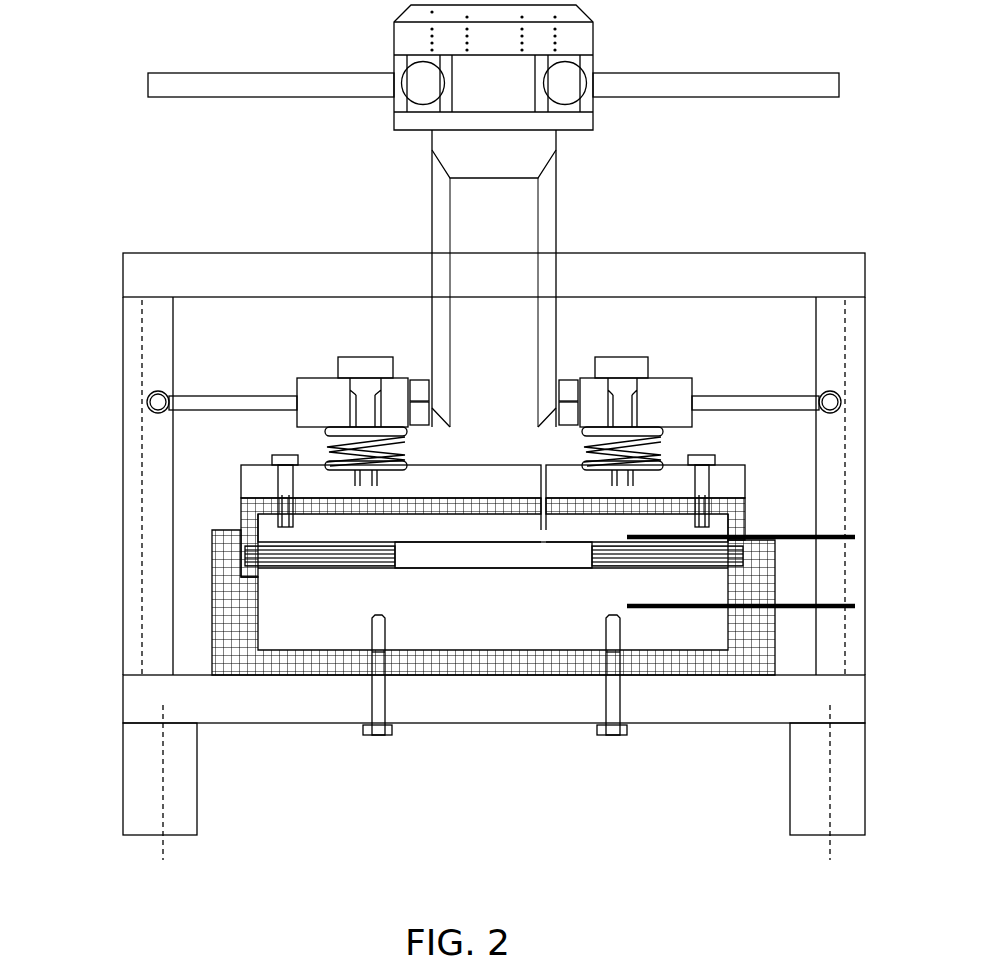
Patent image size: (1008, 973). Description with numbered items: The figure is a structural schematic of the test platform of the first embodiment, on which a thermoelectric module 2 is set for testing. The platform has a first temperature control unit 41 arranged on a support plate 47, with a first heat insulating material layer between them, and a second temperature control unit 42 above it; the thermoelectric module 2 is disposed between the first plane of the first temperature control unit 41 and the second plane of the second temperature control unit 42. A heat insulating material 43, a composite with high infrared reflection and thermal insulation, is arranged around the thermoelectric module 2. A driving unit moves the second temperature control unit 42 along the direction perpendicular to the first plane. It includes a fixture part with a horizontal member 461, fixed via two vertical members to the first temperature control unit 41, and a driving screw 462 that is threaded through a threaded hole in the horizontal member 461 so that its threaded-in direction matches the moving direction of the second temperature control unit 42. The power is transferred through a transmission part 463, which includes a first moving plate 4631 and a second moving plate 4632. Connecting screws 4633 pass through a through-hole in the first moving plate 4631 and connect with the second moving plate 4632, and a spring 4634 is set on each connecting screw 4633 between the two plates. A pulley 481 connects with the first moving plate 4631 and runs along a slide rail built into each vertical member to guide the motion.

The thermoelectric module 2 is at (467, 550).
The first temperature control unit 41 is at (541, 610).
The second temperature control unit 42 is at (330, 525).
The heat insulating material 43 is at (270, 555).
The support plate 47 is at (716, 712).
The horizontal member 461 is at (258, 278).
The driving screw 462 is at (468, 228).
The transmission part 463 is at (872, 211).
The first moving plate 4631 is at (673, 390).
The second moving plate 4632 is at (737, 477).
The connecting screw 4633 is at (618, 366).
The spring 4634 is at (642, 422).
The pulley 481 is at (155, 400).